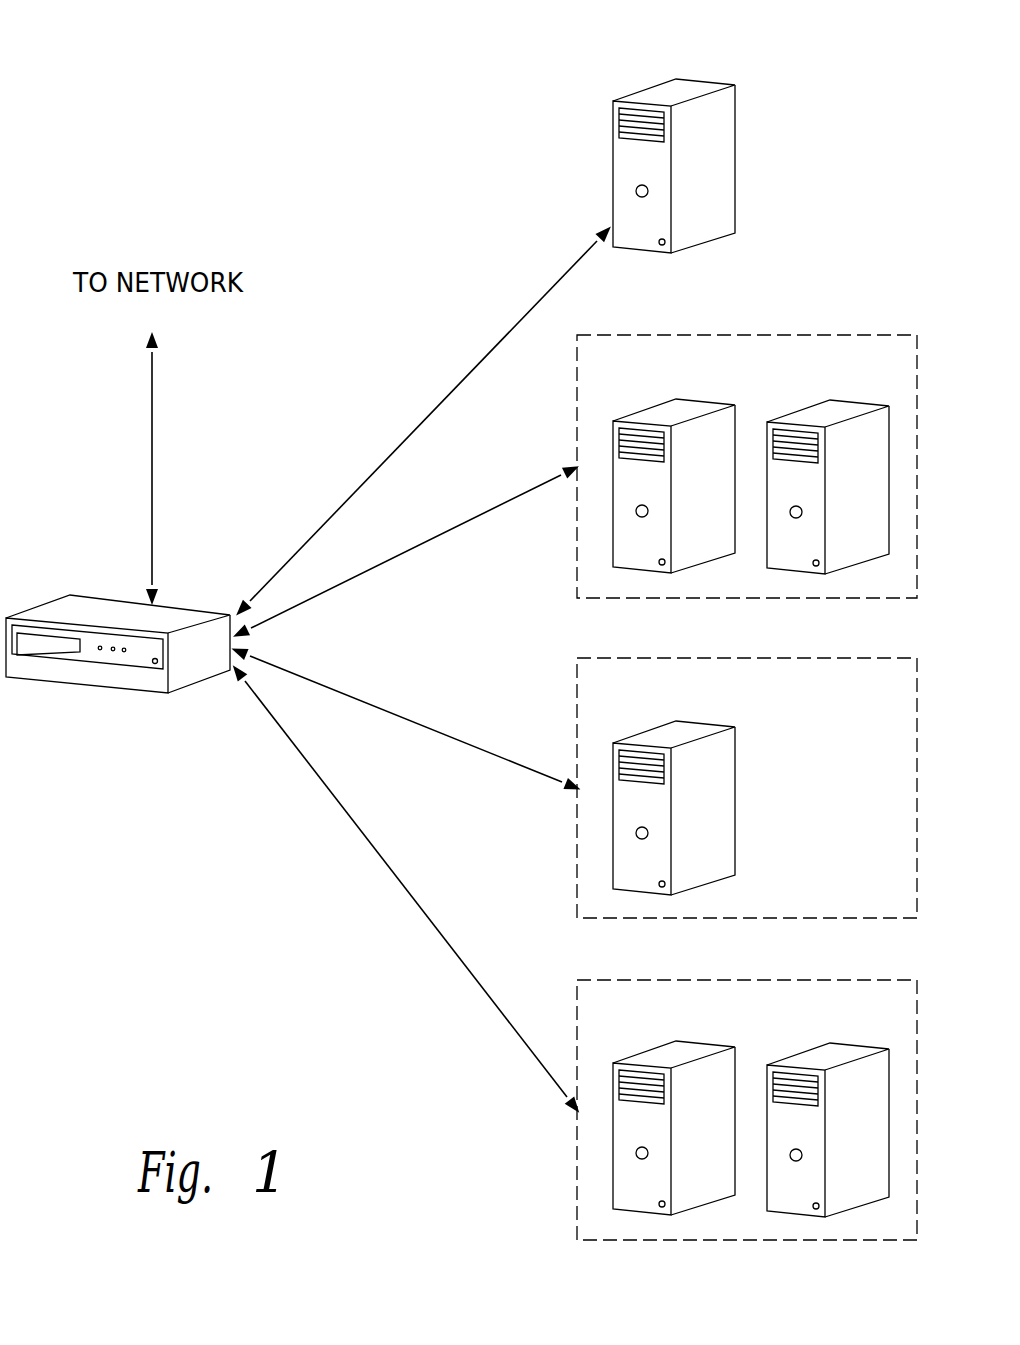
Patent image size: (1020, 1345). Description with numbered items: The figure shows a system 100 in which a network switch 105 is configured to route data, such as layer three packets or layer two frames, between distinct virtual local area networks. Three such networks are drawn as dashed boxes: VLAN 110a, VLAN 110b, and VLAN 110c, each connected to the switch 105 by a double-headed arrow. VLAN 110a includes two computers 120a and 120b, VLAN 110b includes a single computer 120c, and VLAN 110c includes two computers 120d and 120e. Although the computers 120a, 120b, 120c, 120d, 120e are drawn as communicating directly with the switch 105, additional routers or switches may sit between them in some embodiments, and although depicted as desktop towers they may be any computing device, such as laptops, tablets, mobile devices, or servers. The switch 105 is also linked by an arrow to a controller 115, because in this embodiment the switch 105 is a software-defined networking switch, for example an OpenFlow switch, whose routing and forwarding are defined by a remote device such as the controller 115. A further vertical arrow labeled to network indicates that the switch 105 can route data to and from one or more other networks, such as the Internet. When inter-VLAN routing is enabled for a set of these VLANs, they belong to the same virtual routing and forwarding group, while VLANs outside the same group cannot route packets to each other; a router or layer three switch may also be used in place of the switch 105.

The system 100 is at (155, 30).
The switch 105 is at (97, 687).
The VLAN 110a is at (825, 335).
The VLAN 110b is at (825, 658).
The VLAN 110c is at (825, 980).
The controller 115 is at (650, 78).
The computer 120a is at (649, 408).
The computer 120b is at (803, 409).
The computer 120c is at (649, 730).
The computer 120d is at (649, 1050).
The computer 120e is at (803, 1051).